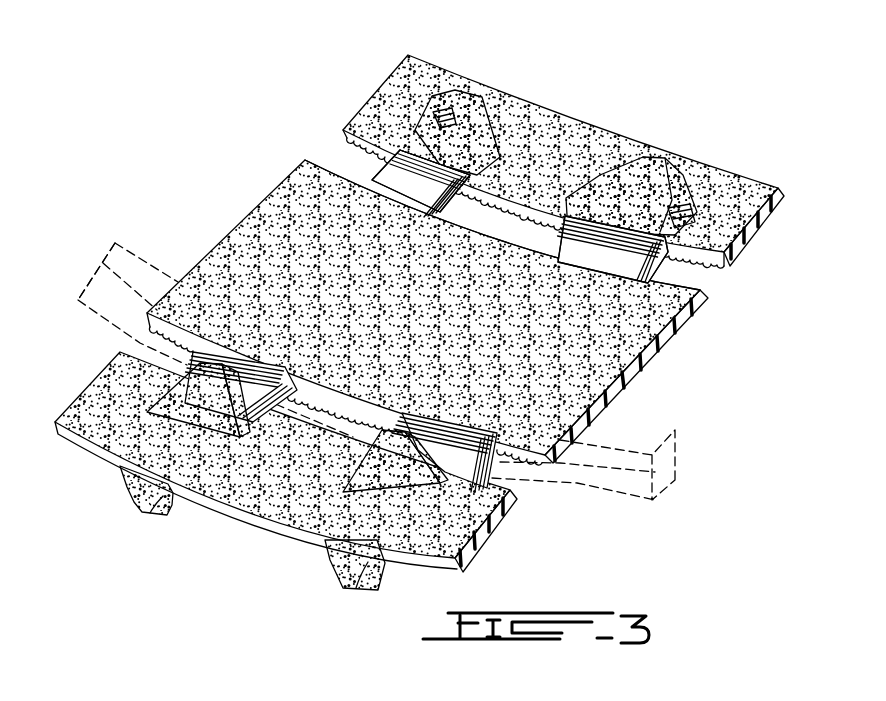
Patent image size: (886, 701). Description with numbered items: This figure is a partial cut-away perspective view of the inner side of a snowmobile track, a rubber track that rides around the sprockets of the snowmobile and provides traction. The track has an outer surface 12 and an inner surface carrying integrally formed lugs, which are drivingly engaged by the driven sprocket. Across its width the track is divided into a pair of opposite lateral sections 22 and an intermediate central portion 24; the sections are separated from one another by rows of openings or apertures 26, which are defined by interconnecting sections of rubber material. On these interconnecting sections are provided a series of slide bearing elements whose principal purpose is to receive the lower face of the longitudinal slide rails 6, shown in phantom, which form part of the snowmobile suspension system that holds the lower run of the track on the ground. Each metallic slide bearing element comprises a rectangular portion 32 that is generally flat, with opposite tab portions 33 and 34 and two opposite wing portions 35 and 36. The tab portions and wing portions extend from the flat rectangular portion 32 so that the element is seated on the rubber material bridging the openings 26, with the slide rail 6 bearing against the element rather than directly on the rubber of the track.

The longitudinal slide 6 is at (97, 252).
The outer surface 12 is at (233, 256).
The lateral section 22 is at (748, 238).
The intermediate central portion 24 is at (632, 373).
The opening 26 is at (334, 124).
The rectangular portion 32 is at (372, 185).
The tab portion 33 is at (340, 208).
The tab portion 34 is at (445, 118).
The wing portion 35 is at (535, 205).
The wing portion 36 is at (405, 180).